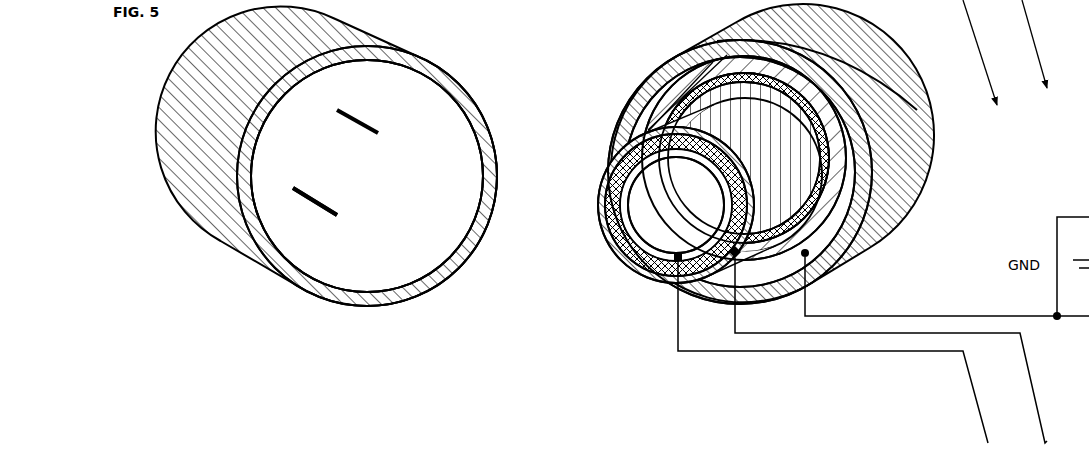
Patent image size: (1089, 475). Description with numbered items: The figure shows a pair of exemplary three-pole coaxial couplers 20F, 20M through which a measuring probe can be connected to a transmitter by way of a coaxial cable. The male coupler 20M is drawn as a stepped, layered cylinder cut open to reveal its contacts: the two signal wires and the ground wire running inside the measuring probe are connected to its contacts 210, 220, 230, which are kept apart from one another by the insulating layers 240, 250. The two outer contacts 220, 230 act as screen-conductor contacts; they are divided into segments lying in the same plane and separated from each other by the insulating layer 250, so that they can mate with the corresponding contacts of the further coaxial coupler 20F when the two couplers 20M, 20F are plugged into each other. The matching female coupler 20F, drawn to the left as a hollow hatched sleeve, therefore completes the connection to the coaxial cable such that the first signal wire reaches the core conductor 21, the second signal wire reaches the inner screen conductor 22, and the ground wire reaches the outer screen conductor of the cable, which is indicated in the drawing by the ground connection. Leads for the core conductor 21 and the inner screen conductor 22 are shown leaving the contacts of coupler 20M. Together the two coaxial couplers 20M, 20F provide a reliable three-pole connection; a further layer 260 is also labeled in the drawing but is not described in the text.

The three-pole coaxial coupler 20F is at (480, 92).
The three-pole coaxial coupler 20M is at (935, 96).
The contact 210 is at (310, 165).
The contact 220 is at (445, 178).
The contact 230 is at (423, 258).
The insulating layer 240 is at (600, 227).
The insulating layer 250 is at (782, 168).
The braided shield 260 is at (897, 112).
The core conductor 21 is at (834, 352).
The inner screen conductor 22 is at (891, 350).